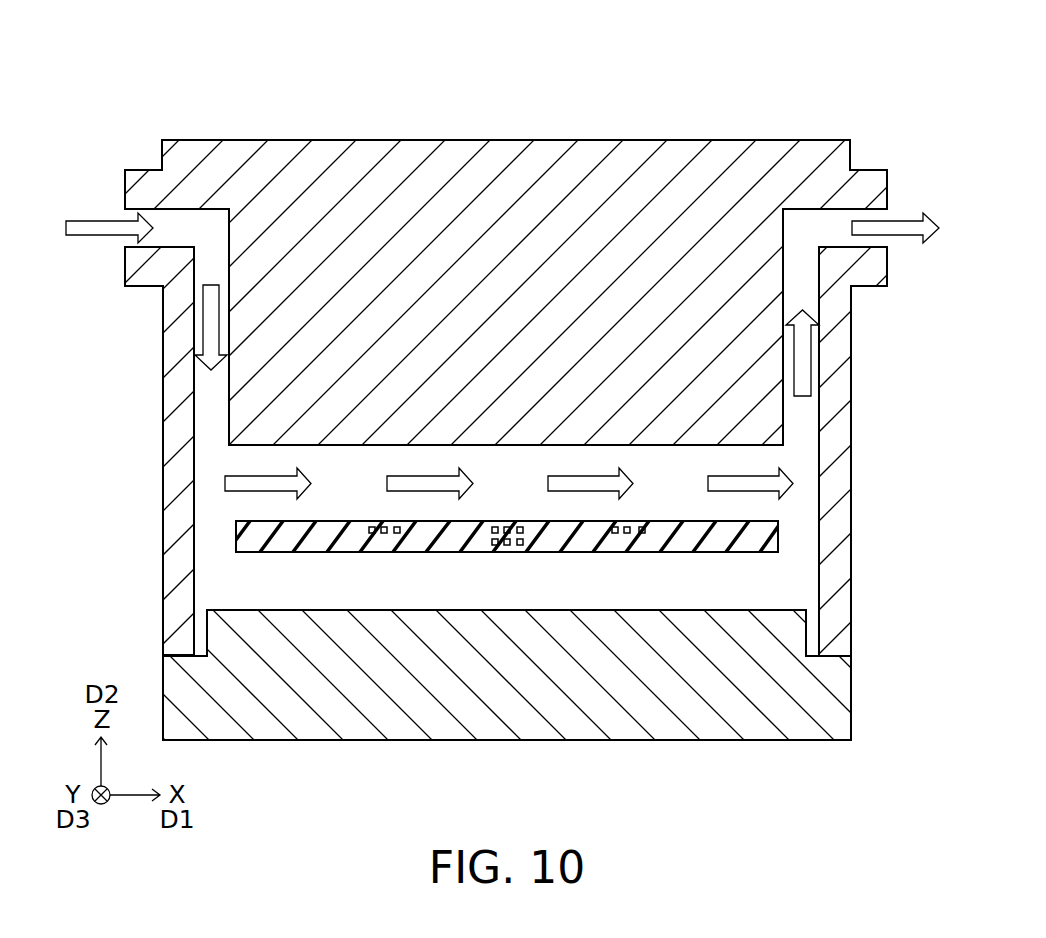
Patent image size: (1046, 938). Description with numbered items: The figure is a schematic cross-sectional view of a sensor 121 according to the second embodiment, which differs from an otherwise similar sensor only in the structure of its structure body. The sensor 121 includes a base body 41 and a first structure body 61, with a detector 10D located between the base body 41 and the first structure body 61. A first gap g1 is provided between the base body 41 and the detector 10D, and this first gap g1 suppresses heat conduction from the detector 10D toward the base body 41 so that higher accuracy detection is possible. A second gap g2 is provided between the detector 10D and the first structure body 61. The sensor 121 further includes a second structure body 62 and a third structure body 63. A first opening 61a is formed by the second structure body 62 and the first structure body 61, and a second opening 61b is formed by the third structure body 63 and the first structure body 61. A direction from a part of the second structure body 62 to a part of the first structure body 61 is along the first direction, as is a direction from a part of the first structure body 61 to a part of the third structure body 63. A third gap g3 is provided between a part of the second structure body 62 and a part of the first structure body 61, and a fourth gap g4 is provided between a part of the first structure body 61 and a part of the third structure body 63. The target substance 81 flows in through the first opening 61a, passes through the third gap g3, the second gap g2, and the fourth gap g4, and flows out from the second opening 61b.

The sensor 121 is at (867, 71).
The first structure body 61 is at (475, 165).
The first opening 61a is at (161, 229).
The second opening 61b is at (835, 224).
The second structure body 62 is at (180, 470).
The third structure body 63 is at (836, 452).
The base body 41 is at (323, 655).
The detector 10D is at (229, 555).
The target substance 81 is at (266, 483).
The first gap g1 is at (494, 580).
The second gap g2 is at (503, 482).
The third gap g3 is at (196, 340).
The fourth gap g4 is at (818, 353).